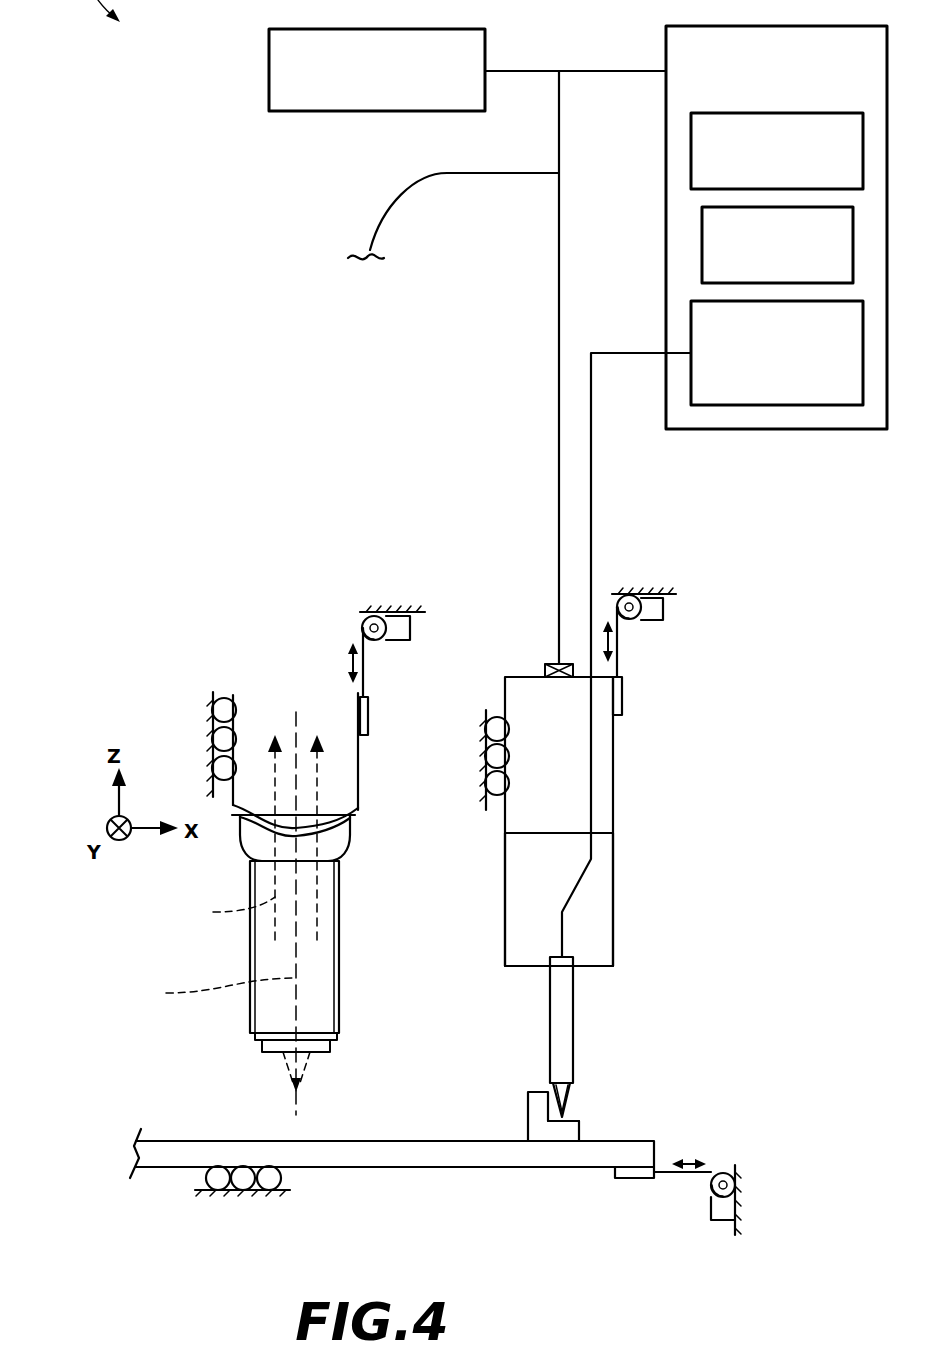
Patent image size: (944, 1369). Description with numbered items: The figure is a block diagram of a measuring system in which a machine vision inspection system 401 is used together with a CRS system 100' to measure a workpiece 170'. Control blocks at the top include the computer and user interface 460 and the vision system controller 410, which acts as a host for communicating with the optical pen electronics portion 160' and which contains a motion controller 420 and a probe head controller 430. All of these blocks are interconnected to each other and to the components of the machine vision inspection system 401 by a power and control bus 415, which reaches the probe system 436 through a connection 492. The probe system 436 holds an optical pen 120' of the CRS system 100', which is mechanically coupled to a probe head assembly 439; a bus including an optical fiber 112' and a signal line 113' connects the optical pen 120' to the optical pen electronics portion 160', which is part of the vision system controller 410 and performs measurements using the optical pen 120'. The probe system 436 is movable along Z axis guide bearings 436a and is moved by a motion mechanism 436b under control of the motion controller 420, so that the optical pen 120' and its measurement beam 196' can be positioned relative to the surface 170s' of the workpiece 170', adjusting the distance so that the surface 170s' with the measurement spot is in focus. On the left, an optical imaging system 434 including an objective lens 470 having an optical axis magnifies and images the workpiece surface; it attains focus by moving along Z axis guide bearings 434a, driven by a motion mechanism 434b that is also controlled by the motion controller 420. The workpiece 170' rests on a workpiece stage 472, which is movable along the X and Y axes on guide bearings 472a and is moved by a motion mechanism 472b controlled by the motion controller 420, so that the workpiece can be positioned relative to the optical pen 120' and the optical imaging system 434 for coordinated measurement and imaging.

The machine vision inspection system 401 is at (218, 178).
The computer and user interface 460 is at (323, 28).
The power and control bus 415 is at (577, 70).
The vision system controller 410 is at (720, 26).
The probe head controller 430 is at (691, 136).
The motion controller 420 is at (702, 232).
The optical pen electronics portion 160' is at (730, 353).
The optical fiber 112' is at (648, 655).
The signal line 113' is at (648, 655).
The probe system 436 is at (684, 748).
The connection 492 is at (548, 664).
The motion mechanism 436b is at (660, 620).
The Z axis guide bearings 436a is at (486, 715).
The probe head assembly 439 is at (621, 890).
The optical pen 120' is at (518, 1020).
The CRS system 100' is at (512, 1082).
The measurement beam 196' is at (608, 1091).
The workpiece 170' is at (516, 1116).
The workpiece surface 170s' is at (610, 1119).
The workpiece stage 472 is at (400, 1167).
The guide bearings 472a is at (195, 1178).
The motion mechanism 472b is at (722, 1221).
The optical imaging system 434 is at (374, 758).
The motion mechanism 434b is at (404, 641).
The Z axis guide bearings 434a is at (224, 696).
The objective lens 470 is at (340, 917).